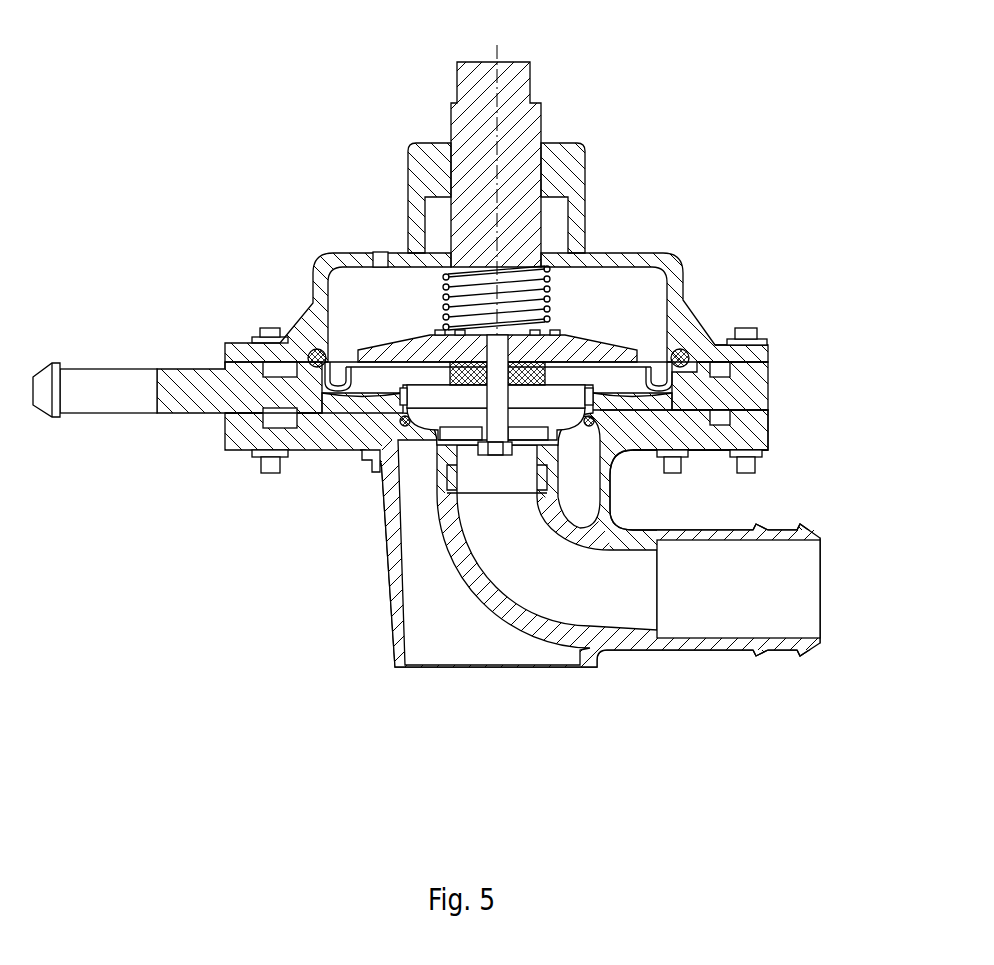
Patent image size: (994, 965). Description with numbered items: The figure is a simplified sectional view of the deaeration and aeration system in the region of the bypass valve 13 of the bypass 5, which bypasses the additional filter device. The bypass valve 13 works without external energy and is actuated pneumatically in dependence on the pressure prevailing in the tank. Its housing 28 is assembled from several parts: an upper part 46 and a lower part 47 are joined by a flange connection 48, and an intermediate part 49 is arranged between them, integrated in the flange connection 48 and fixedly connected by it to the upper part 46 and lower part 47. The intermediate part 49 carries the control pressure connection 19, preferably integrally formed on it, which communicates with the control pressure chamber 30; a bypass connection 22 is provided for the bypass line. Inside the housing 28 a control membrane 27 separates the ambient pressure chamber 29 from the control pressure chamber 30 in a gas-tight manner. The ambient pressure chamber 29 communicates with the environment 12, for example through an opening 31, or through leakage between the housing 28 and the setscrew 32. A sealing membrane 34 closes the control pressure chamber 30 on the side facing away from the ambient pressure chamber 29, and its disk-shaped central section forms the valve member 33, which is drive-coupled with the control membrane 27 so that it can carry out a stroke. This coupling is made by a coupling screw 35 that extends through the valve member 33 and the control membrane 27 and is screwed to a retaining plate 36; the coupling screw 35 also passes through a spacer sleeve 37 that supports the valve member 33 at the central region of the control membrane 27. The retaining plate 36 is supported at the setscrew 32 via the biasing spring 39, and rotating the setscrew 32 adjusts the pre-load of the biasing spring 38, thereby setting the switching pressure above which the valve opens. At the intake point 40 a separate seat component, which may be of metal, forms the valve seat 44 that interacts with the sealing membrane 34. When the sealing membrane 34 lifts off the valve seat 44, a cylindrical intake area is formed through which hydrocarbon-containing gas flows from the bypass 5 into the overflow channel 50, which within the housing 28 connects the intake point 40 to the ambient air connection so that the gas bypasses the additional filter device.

The bypass 5 is at (692, 662).
The environment 12 is at (284, 181).
The bypass valve 13 is at (535, 215).
The control pressure connection 19 is at (105, 378).
The bypass connection 22 is at (784, 653).
The control membrane 27 is at (320, 405).
The housing 28 is at (590, 132).
The ambient pressure chamber 29 is at (373, 314).
The control pressure chamber 30 is at (345, 358).
The opening 31 is at (383, 252).
The setscrew 32 is at (533, 90).
The valve member 33 is at (443, 517).
The sealing membrane 34 is at (378, 458).
The coupling screw 35 is at (500, 458).
The retaining plate 36 is at (630, 350).
The spacer sleeve 37 is at (597, 468).
The biasing spring 38 is at (668, 325).
The biasing spring 39 is at (550, 290).
The intake point 40 is at (483, 490).
The valve seat 44 is at (398, 450).
The upper part 46 is at (767, 350).
The lower part 47 is at (757, 437).
The flange connection 48 is at (805, 382).
The intermediate part 49 is at (762, 393).
The overflow channel 50 is at (428, 633).